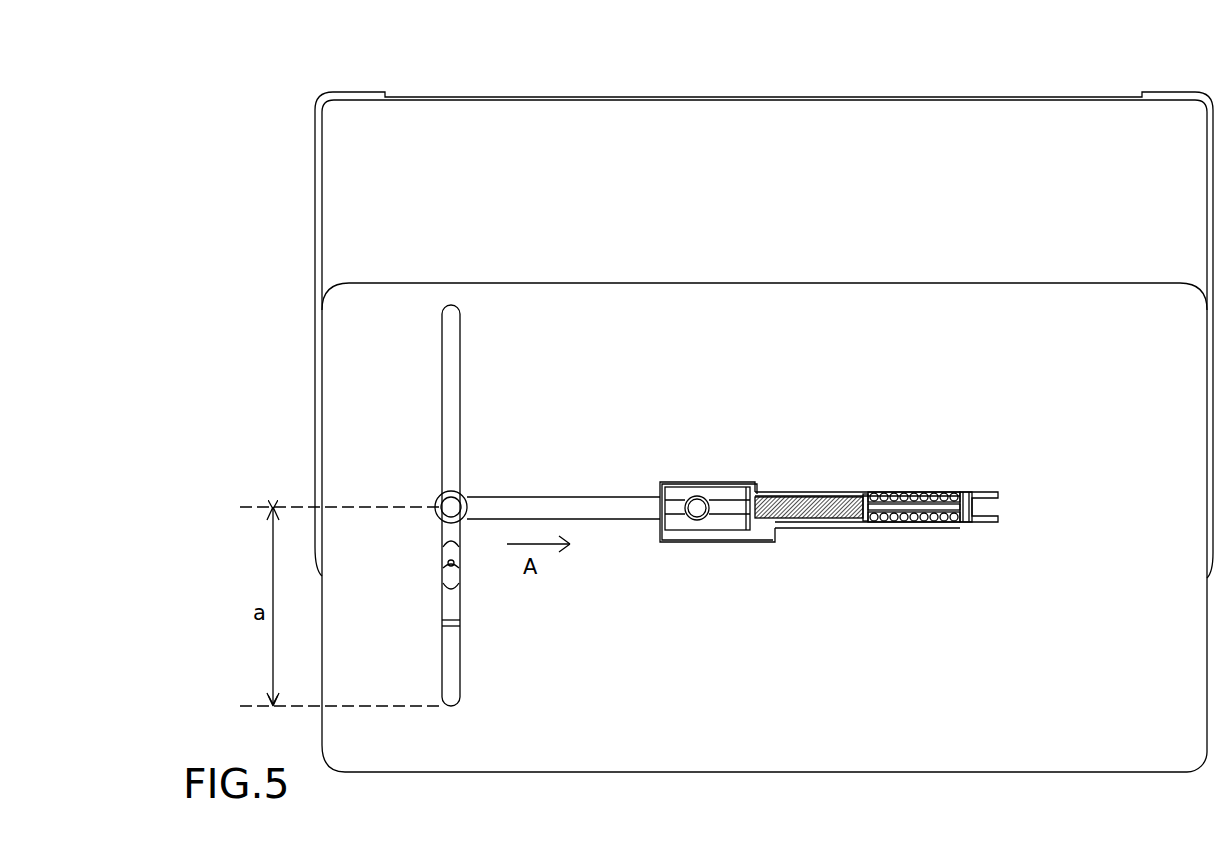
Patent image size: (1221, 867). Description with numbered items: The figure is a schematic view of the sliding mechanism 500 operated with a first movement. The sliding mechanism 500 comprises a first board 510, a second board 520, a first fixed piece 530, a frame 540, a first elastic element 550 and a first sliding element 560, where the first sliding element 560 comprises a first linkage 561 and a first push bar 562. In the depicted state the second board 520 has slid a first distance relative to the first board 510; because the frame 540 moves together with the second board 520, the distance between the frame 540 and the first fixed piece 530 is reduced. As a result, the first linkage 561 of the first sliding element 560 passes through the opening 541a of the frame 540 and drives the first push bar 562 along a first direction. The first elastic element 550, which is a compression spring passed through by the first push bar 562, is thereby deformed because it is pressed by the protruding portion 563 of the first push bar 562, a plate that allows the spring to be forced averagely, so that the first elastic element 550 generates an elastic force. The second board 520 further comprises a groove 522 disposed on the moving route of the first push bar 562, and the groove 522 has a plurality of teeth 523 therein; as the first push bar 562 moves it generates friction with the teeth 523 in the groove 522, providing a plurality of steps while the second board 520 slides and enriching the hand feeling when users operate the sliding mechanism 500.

The sliding mechanism 500 is at (1151, 59).
The first board 510 is at (821, 112).
The second board 520 is at (858, 300).
The groove 522 is at (925, 520).
The teeth 523 is at (937, 495).
The first fixed piece 530 is at (445, 490).
The frame 540 is at (823, 490).
The opening 541a is at (659, 518).
The first elastic element 550 is at (823, 518).
The first sliding element 560 is at (622, 490).
The first linkage 561 is at (548, 505).
The first push bar 562 is at (730, 505).
The protruding portion 563 is at (746, 522).